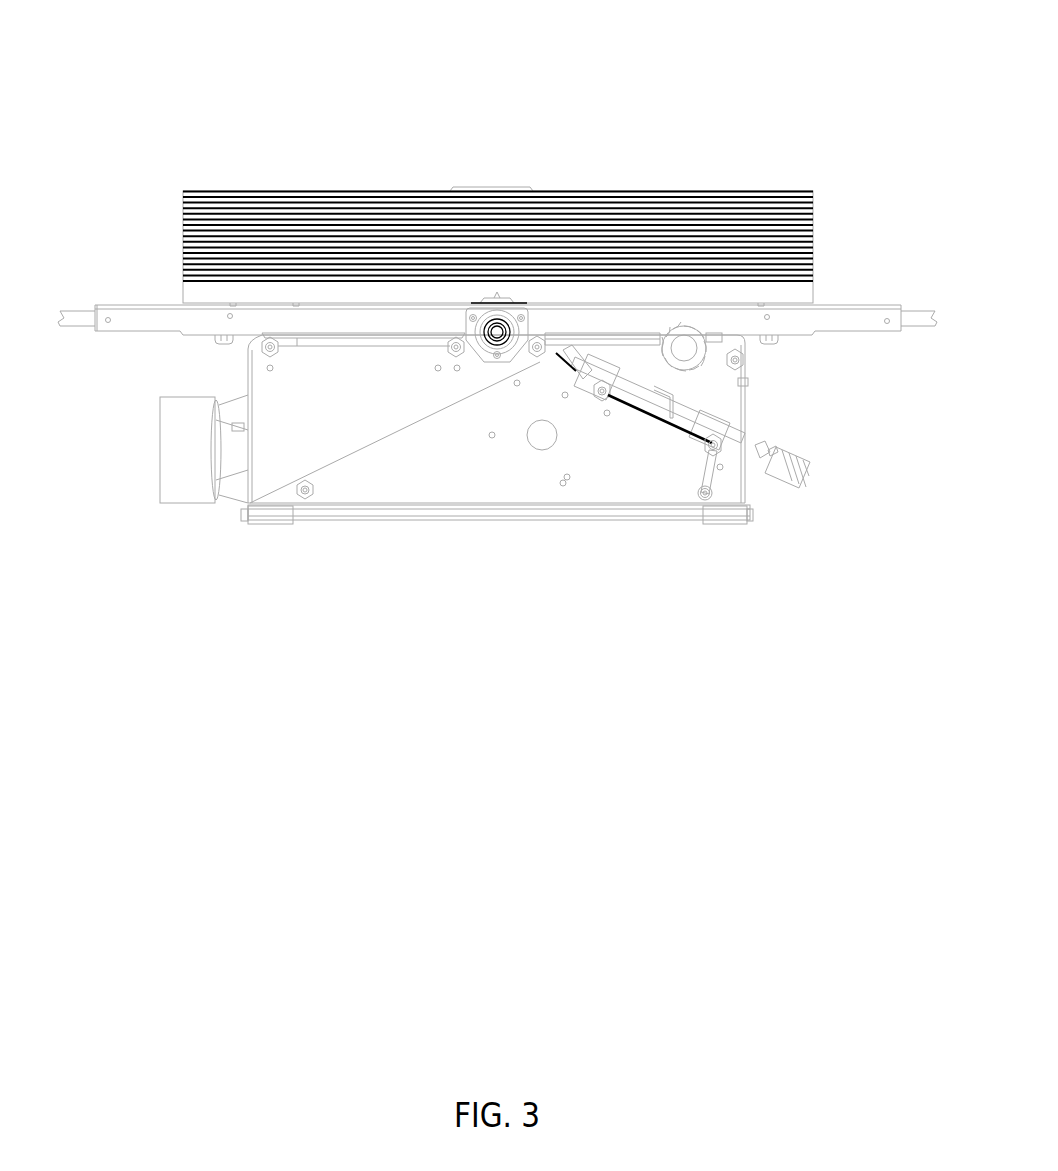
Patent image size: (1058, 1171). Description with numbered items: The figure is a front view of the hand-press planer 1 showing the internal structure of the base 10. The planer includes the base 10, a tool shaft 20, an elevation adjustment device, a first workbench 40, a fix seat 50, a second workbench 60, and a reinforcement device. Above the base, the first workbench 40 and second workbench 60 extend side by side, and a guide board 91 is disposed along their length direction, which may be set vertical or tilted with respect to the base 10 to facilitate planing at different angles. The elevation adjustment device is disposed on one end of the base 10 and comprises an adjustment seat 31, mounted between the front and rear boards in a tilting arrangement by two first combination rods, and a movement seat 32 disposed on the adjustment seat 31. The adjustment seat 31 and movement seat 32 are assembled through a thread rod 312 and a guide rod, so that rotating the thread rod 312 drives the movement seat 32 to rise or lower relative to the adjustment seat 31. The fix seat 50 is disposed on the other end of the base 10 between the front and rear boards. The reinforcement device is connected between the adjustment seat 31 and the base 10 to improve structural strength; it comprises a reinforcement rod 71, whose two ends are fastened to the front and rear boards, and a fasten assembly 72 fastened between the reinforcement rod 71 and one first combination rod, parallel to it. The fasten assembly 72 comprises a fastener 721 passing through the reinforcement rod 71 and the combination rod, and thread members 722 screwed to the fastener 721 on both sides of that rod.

The hand-press planer 1 is at (943, 41).
The guide board 91 is at (747, 205).
The first workbench 40 is at (838, 322).
The second workbench 60 is at (133, 322).
The fix seat 50 is at (298, 335).
The base 10 is at (765, 407).
The tool shaft 20 is at (488, 360).
The movement seat 32 is at (715, 338).
The adjustment seat 31 is at (645, 412).
The thread rod 312 is at (755, 445).
The reinforcement rod 71 is at (707, 497).
The fasten assembly 72 is at (809, 590).
The fastener 721 is at (708, 478).
The thread member 722 is at (715, 452).